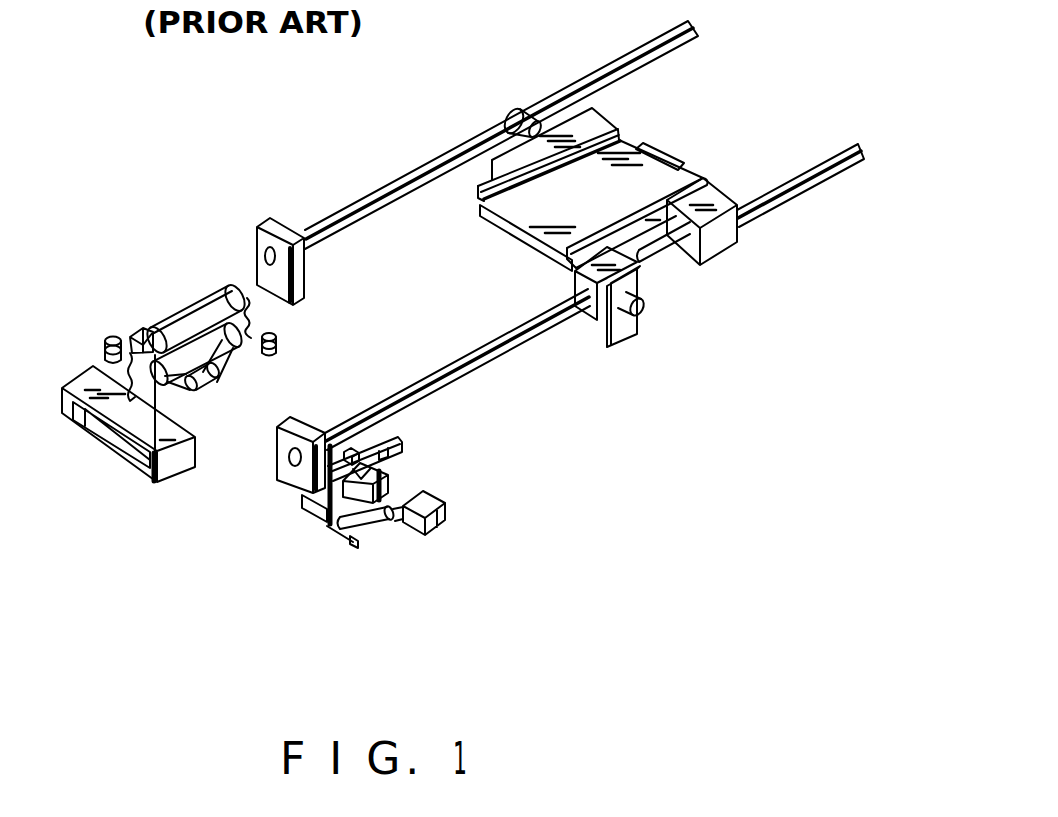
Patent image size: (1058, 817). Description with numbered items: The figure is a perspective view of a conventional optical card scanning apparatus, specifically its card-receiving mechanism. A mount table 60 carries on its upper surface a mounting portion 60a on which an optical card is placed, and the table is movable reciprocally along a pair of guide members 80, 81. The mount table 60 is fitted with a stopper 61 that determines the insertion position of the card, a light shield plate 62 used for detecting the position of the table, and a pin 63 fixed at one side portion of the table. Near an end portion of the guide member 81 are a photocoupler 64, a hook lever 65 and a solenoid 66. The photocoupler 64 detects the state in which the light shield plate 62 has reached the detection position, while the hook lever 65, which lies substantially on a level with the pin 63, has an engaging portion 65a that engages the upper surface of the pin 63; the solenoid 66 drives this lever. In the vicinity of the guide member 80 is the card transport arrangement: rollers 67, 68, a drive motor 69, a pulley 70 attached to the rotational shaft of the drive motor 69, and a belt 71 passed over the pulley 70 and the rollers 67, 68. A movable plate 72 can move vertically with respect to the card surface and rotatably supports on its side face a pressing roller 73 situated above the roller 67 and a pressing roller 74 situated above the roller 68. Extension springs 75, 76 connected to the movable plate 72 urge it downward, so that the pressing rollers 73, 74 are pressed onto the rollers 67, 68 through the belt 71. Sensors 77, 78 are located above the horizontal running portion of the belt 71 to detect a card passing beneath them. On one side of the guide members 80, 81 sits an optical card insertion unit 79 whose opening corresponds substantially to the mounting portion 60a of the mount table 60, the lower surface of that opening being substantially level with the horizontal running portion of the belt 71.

The mount table 60 is at (567, 122).
The mounting portion 60a is at (648, 172).
The stopper 61 is at (678, 166).
The light shield plate 62 is at (623, 334).
The pin 63 is at (645, 307).
The photocoupler 64 is at (391, 478).
The hook lever 65 is at (401, 440).
The engaging portion 65a is at (384, 458).
The solenoid 66 is at (433, 523).
The roller 67 is at (153, 474).
The roller 68 is at (235, 347).
The drive motor 69 is at (181, 376).
The pulley 70 is at (210, 384).
The belt 71 is at (170, 326).
The movable plate 72 is at (203, 305).
The pressing roller 73 is at (147, 326).
The pressing roller 74 is at (230, 273).
The extension spring 75 is at (128, 378).
The extension spring 76 is at (250, 307).
The sensor 77 is at (108, 340).
The sensor 78 is at (278, 348).
The optical card insertion unit 79 is at (98, 402).
The guide member 80 is at (408, 184).
The guide member 81 is at (484, 344).